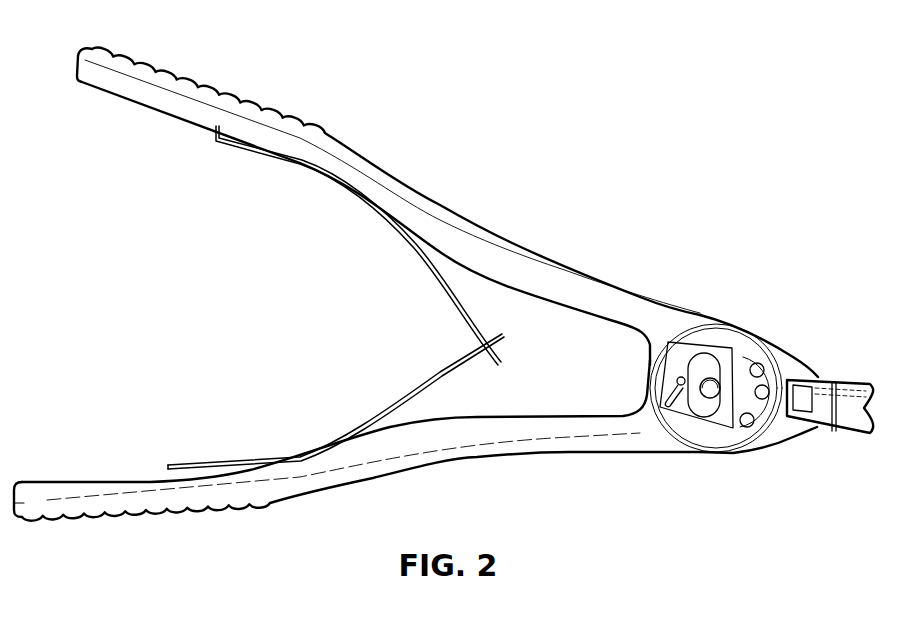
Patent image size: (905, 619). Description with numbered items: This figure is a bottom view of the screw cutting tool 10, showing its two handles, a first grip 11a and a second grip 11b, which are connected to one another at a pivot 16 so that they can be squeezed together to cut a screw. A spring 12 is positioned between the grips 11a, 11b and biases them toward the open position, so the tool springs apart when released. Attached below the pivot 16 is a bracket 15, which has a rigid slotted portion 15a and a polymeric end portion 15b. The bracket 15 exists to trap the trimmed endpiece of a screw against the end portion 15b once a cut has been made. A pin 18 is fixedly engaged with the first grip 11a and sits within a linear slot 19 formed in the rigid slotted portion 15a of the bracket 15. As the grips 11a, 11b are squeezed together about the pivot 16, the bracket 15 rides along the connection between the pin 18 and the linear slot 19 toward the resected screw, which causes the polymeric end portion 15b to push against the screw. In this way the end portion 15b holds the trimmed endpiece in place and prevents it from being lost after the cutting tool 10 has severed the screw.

The screw cutting tool 10 is at (665, 82).
The first grip 11a is at (335, 152).
The second grip 11b is at (300, 495).
The spring 12 is at (387, 230).
The bracket 15 is at (687, 413).
The rigid slotted portion 15a is at (707, 350).
The polymeric end portion 15b is at (740, 370).
The pivot 16 is at (712, 392).
The pin 18 is at (682, 378).
The linear slot 19 is at (673, 391).